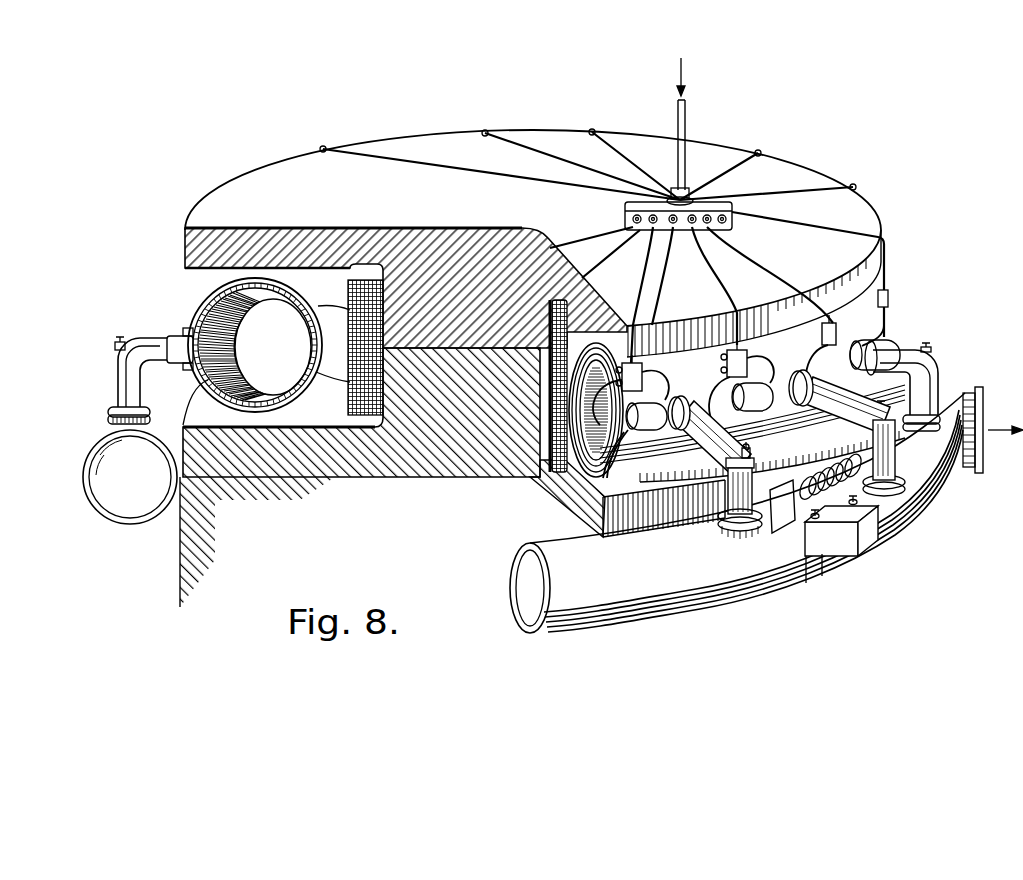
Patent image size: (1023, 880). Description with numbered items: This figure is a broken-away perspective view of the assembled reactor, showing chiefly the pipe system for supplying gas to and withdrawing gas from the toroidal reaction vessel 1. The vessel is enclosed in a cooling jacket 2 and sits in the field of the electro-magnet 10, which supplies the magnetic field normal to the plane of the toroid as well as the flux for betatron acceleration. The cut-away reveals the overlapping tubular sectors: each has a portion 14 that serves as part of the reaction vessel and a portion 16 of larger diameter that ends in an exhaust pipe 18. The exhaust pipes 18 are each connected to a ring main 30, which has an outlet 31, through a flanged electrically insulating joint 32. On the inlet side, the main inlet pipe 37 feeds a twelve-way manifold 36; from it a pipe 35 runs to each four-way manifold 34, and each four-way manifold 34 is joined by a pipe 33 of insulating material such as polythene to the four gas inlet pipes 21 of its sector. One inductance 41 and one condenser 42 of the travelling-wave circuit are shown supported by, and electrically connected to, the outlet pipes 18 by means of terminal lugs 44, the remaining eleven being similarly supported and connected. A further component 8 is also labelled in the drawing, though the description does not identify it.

The toroidal reaction vessel 1 is at (195, 362).
The cooling jacket 2 is at (210, 299).
The support post 8 is at (733, 503).
The electro-magnet 10 is at (295, 199).
The portion 14 is at (186, 332).
The portion of larger diameter 16 is at (304, 376).
The exhaust pipe 18 is at (143, 340).
The gas inlet pipes 21 is at (680, 402).
The ring main 30 is at (126, 524).
The outlet 31 is at (984, 458).
The flanged electrically insulating joint 32 is at (112, 415).
The pipe 33 is at (590, 445).
The four-way manifold 34 is at (630, 360).
The pipe 35 is at (500, 177).
The 12-way manifold 36 is at (733, 217).
The main inlet pipe 37 is at (686, 114).
The inductance 41 is at (793, 490).
The condenser 42 is at (863, 532).
The terminal lugs 44 is at (113, 347).